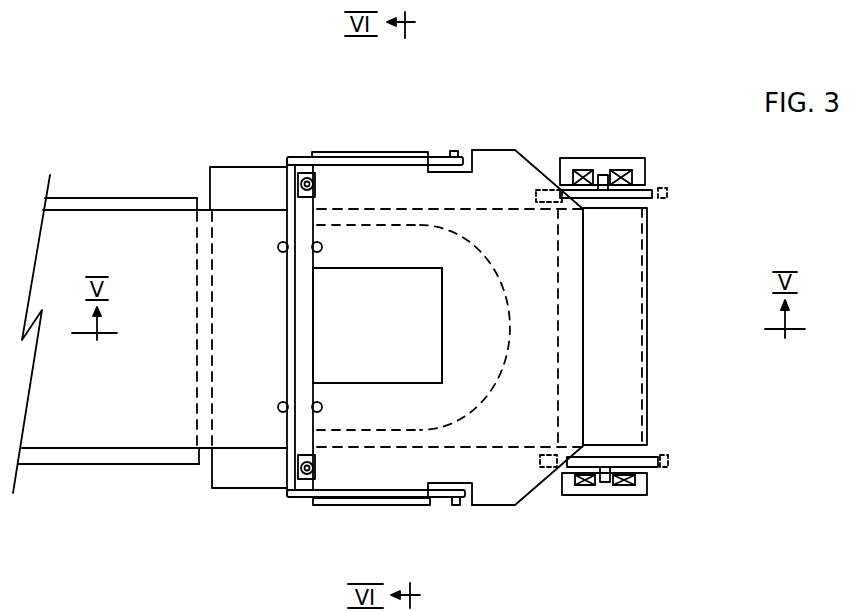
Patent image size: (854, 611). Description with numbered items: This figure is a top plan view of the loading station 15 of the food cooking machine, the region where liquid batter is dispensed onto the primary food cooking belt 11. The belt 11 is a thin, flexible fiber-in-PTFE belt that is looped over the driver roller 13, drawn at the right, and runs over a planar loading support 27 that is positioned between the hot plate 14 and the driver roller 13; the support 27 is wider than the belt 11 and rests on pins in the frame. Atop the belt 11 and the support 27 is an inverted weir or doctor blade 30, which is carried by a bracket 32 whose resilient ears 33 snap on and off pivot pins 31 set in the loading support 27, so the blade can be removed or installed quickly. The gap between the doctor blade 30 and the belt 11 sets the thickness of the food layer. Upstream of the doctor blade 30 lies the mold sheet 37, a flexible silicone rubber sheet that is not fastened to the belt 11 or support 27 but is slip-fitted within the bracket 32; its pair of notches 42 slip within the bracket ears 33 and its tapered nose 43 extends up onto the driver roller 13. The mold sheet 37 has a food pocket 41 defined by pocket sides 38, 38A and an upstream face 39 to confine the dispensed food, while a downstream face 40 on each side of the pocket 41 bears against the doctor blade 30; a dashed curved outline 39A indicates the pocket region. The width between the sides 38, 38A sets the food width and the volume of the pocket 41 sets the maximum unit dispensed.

The primary food cooking belt 11 is at (650, 292).
The driver roller 13 is at (648, 450).
The electrically heated hot plate 14 is at (97, 465).
The loading station 15 is at (623, 97).
The planar loading support 27 is at (217, 187).
The doctor blade 30 is at (318, 287).
The pivot pins 31 is at (457, 152).
The bracket 32 is at (283, 182).
The resilient ears 33 is at (437, 155).
The mold sheet 37 is at (537, 163).
The pocket side 38 is at (397, 270).
The pocket side 38A is at (407, 230).
The upstream face 39 is at (433, 335).
The curved path 39A is at (493, 293).
The downstream face 40 is at (313, 263).
The food pocket 41 is at (377, 325).
The notches 42 is at (467, 153).
The tapered nose 43 is at (585, 260).